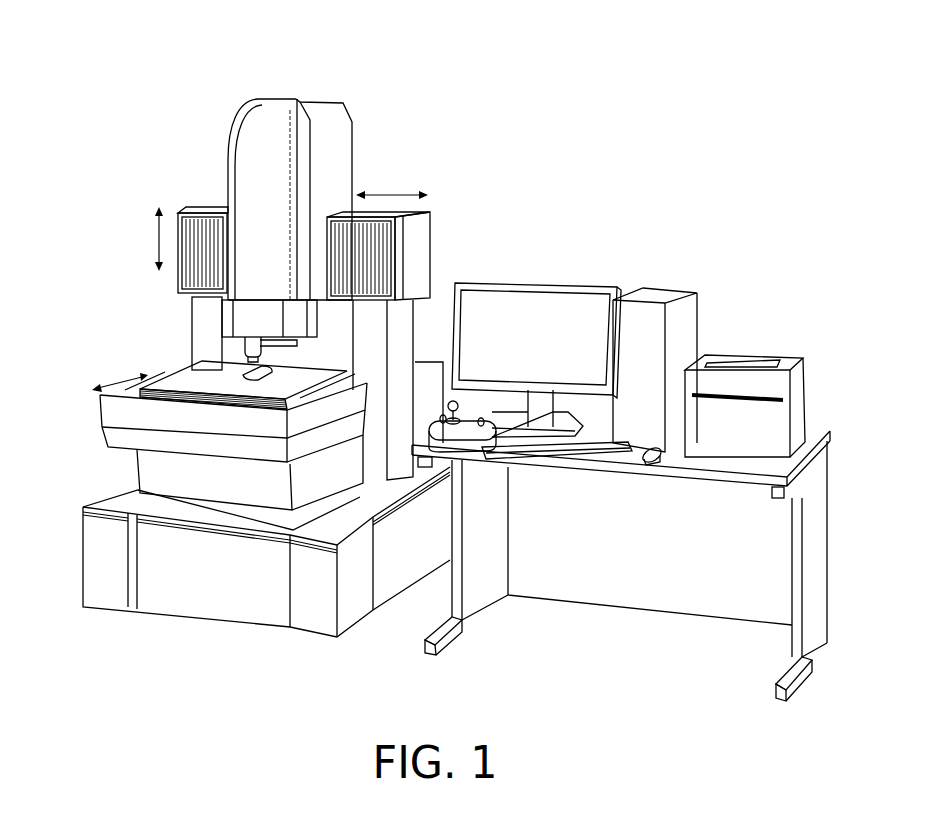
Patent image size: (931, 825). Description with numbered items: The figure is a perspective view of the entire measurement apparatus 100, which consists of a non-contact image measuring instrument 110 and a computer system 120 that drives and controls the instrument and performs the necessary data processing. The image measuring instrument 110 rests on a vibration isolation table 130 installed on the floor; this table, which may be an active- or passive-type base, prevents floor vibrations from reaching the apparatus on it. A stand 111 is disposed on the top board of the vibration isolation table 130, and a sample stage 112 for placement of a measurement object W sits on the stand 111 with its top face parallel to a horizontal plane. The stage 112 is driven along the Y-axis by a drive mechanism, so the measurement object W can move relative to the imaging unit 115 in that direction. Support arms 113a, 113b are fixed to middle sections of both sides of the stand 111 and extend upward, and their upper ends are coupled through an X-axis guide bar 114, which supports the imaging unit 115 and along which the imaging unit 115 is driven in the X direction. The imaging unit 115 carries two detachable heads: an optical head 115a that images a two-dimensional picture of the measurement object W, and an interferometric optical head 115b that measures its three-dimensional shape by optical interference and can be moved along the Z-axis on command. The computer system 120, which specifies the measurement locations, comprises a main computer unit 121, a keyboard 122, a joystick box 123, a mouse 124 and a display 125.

The measurement apparatus 100 is at (556, 21).
The image measuring instrument 110 is at (324, 80).
The stand 111 is at (148, 397).
The sample stage 112 is at (185, 373).
The support arm 113a is at (403, 337).
The support arm 113b is at (193, 352).
The X-axis guide bar 114 is at (203, 207).
The imaging unit 115 is at (228, 137).
The optical head 115a is at (258, 338).
The interferometric optical head 115b is at (247, 350).
The computer system 120 is at (652, 240).
The main computer unit 121 is at (672, 286).
The keyboard 122 is at (570, 455).
The joystick box 123 is at (472, 452).
The mouse 124 is at (648, 468).
The display 125 is at (537, 286).
The vibration isolation table 130 is at (248, 592).
The measurement object W is at (245, 372).